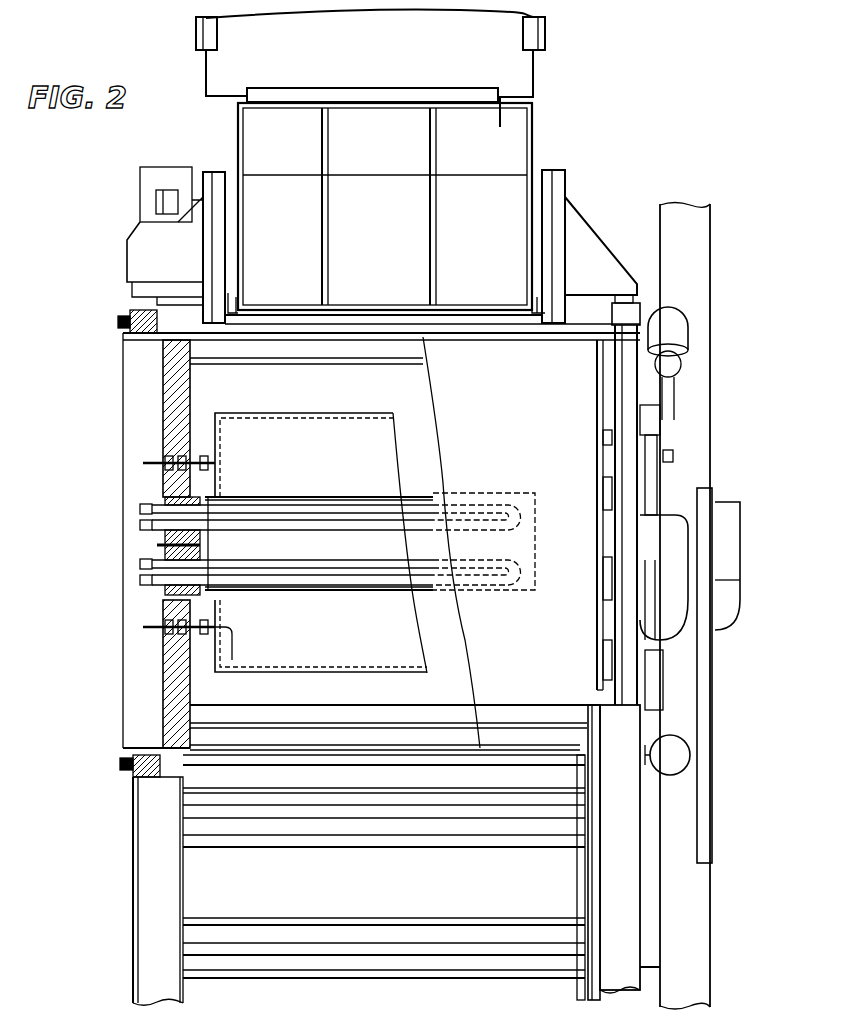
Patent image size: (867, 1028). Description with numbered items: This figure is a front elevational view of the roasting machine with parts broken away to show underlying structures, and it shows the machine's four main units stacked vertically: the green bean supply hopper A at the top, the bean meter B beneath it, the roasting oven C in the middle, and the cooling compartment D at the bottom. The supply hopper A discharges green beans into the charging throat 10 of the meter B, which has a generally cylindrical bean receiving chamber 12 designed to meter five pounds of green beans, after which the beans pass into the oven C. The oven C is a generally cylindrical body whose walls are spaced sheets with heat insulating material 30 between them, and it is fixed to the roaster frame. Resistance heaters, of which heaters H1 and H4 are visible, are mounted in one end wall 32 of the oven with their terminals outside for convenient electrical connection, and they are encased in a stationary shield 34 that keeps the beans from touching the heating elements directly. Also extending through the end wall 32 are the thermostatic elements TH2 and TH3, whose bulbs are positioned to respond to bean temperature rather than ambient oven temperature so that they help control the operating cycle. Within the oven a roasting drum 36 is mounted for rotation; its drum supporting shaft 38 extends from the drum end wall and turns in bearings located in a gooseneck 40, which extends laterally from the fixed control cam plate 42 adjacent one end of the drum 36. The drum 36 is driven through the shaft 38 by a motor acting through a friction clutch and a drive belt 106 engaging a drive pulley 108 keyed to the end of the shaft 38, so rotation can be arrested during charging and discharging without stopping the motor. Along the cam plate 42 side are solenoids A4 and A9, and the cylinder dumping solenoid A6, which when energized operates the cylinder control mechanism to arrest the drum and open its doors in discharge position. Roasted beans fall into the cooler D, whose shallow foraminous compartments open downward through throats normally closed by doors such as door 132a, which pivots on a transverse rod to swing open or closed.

The green bean supply hopper A is at (518, 72).
The charging throat 10 is at (512, 125).
The bean meter B is at (495, 163).
The bean receiving chamber 12 is at (502, 240).
The actuator housing A9 is at (140, 197).
The roasting oven C is at (157, 358).
The heat insulating material 30 is at (165, 405).
The end wall 32 is at (165, 700).
The thermostatic element TH3 is at (143, 465).
The thermostatic element TH2 is at (145, 627).
The resistance heater H4 is at (140, 510).
The resistance heater H1 is at (140, 565).
The stationary shield 34 is at (283, 497).
The roasting drum 36 is at (320, 413).
The drum supporting shaft 38 is at (605, 545).
The control cam plate 42 is at (625, 532).
The actuator A4 is at (668, 322).
The cylinder dumping solenoid A6 is at (673, 770).
The drive pulley 108 is at (715, 488).
The drive belt 106 is at (705, 692).
The gooseneck 40 is at (732, 610).
The cooling compartment D is at (213, 887).
The discharge door 132a is at (237, 970).